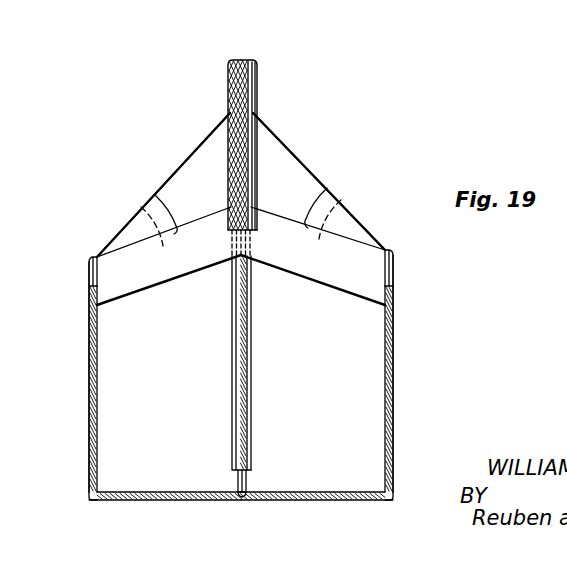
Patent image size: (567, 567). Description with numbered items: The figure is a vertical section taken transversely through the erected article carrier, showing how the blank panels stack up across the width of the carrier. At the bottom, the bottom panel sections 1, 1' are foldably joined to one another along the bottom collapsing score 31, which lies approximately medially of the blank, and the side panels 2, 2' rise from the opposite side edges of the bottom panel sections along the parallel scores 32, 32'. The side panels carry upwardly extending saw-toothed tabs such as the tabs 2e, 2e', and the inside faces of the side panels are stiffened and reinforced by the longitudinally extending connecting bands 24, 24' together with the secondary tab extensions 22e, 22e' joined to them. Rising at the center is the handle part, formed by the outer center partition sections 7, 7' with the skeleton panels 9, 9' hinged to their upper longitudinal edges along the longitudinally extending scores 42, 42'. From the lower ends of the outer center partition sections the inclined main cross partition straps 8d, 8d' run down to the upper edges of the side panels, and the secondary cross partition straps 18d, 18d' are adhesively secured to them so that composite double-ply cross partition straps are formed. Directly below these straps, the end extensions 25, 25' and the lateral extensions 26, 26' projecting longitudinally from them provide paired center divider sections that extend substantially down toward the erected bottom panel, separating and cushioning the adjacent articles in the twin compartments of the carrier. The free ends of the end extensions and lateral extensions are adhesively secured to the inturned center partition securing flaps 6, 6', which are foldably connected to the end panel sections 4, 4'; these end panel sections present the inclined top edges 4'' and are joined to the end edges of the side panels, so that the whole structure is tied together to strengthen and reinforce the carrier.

The longitudinally extending score 42' is at (219, 121).
The longitudinally extending score 42 is at (265, 125).
The outer center partition section 7' is at (218, 145).
The skeleton panel 9' is at (213, 145).
The outer center partition section 7 is at (278, 145).
The skeleton panel 9 is at (280, 146).
The inclined top edge 4'' is at (241, 185).
The end panel section 4' is at (133, 281).
The end panel section 4 is at (340, 280).
The secondary cross partition strap 18d' is at (164, 216).
The main cross partition strap 8d' is at (134, 221).
The secondary cross partition strap 18d is at (318, 213).
The main cross partition strap 8d is at (354, 217).
The saw-toothed tab 2e' is at (66, 374).
The secondary tab extension 22e' is at (64, 284).
The connecting band 24' is at (123, 389).
The side panel 2' is at (63, 377).
The saw-toothed tab 2e is at (416, 371).
The secondary tab extension 22e is at (425, 282).
The connecting band 24 is at (363, 389).
The side panel 2 is at (412, 373).
The end extension 25' is at (169, 287).
The end extension 25 is at (313, 286).
The lateral extension 26' is at (218, 363).
The lateral extension 26 is at (269, 363).
The center partition securing flap 6' is at (216, 473).
The center partition securing flap 6 is at (268, 473).
The bottom panel section 1' is at (165, 516).
The bottom panel section 1 is at (316, 516).
The bottom collapsing score 31 is at (241, 500).
The score 32' is at (66, 513).
The score 32 is at (396, 513).